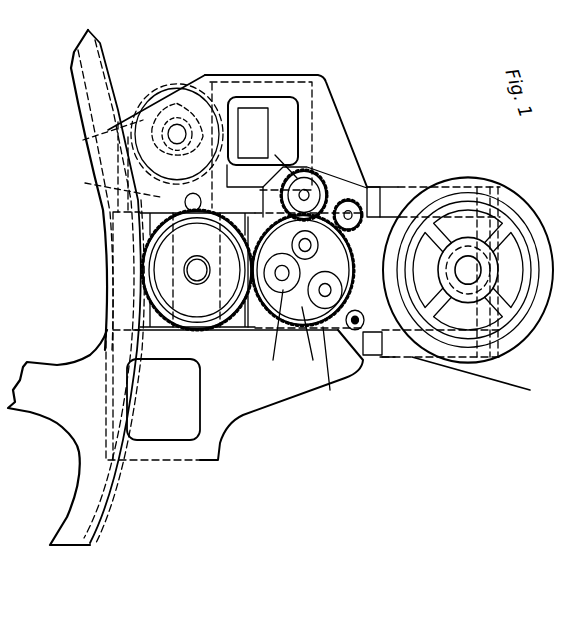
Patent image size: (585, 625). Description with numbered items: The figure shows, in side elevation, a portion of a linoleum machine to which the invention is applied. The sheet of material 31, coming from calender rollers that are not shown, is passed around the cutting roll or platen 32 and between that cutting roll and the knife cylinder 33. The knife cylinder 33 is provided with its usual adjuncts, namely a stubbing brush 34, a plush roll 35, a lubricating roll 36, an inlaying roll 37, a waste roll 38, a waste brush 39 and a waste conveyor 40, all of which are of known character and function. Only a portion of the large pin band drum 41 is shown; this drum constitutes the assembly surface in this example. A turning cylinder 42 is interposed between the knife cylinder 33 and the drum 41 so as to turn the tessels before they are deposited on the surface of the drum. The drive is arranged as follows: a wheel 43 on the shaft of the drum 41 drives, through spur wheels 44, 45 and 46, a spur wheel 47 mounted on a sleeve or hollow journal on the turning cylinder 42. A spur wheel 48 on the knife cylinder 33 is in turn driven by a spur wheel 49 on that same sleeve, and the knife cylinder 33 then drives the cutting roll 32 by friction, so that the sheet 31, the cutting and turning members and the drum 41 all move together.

The sheet of material 31 is at (477, 389).
The cutting roll 32 is at (528, 333).
The knife cylinder 33 is at (298, 300).
The stubbing brush 34 is at (360, 203).
The plush roll 35 is at (357, 330).
The lubricating roll 36 is at (337, 373).
The inlaying roll 37 is at (297, 310).
The waste roll 38 is at (311, 270).
The waste brush 39 is at (325, 183).
The waste conveyor 40 is at (268, 133).
The pin band drum 41 is at (115, 473).
The turning cylinder 42 is at (210, 300).
The wheel 43 is at (100, 533).
The spur wheel 44 is at (160, 87).
The spur wheel 45 is at (105, 143).
The spur wheel 46 is at (114, 194).
The spur wheel 47 is at (141, 263).
The spur wheel 48 is at (250, 313).
The spur wheel 49 is at (157, 330).